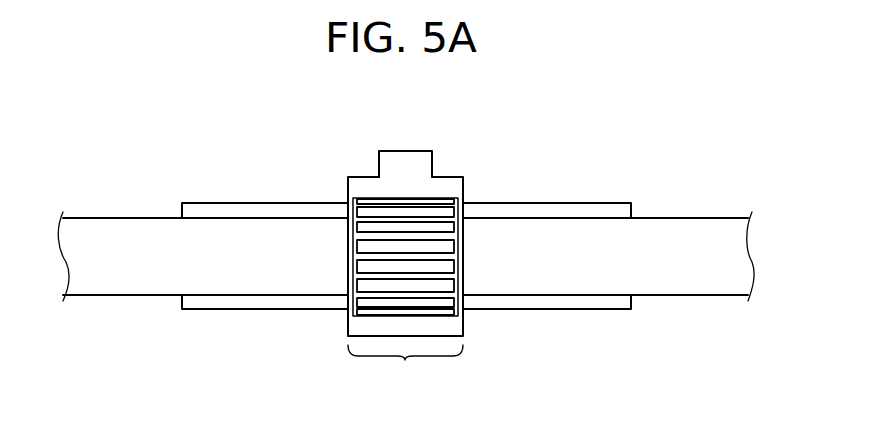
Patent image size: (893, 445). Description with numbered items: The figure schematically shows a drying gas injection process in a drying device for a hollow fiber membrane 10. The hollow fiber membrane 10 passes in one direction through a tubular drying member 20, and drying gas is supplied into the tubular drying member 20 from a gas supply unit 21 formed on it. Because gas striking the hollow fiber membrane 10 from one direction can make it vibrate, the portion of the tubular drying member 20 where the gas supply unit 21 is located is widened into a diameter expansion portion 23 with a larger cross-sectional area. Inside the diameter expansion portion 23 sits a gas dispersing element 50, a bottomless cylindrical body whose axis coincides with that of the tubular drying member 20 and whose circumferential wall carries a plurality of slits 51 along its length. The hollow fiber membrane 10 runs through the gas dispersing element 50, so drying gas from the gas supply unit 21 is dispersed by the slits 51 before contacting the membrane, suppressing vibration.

The hollow fiber membrane 10 is at (698, 223).
The tubular drying member 20 is at (229, 192).
The gas supply unit 21 is at (379, 155).
The diameter expansion portion 23 is at (405, 371).
The gas dispersing element 50 is at (442, 182).
The slits 51 is at (362, 247).